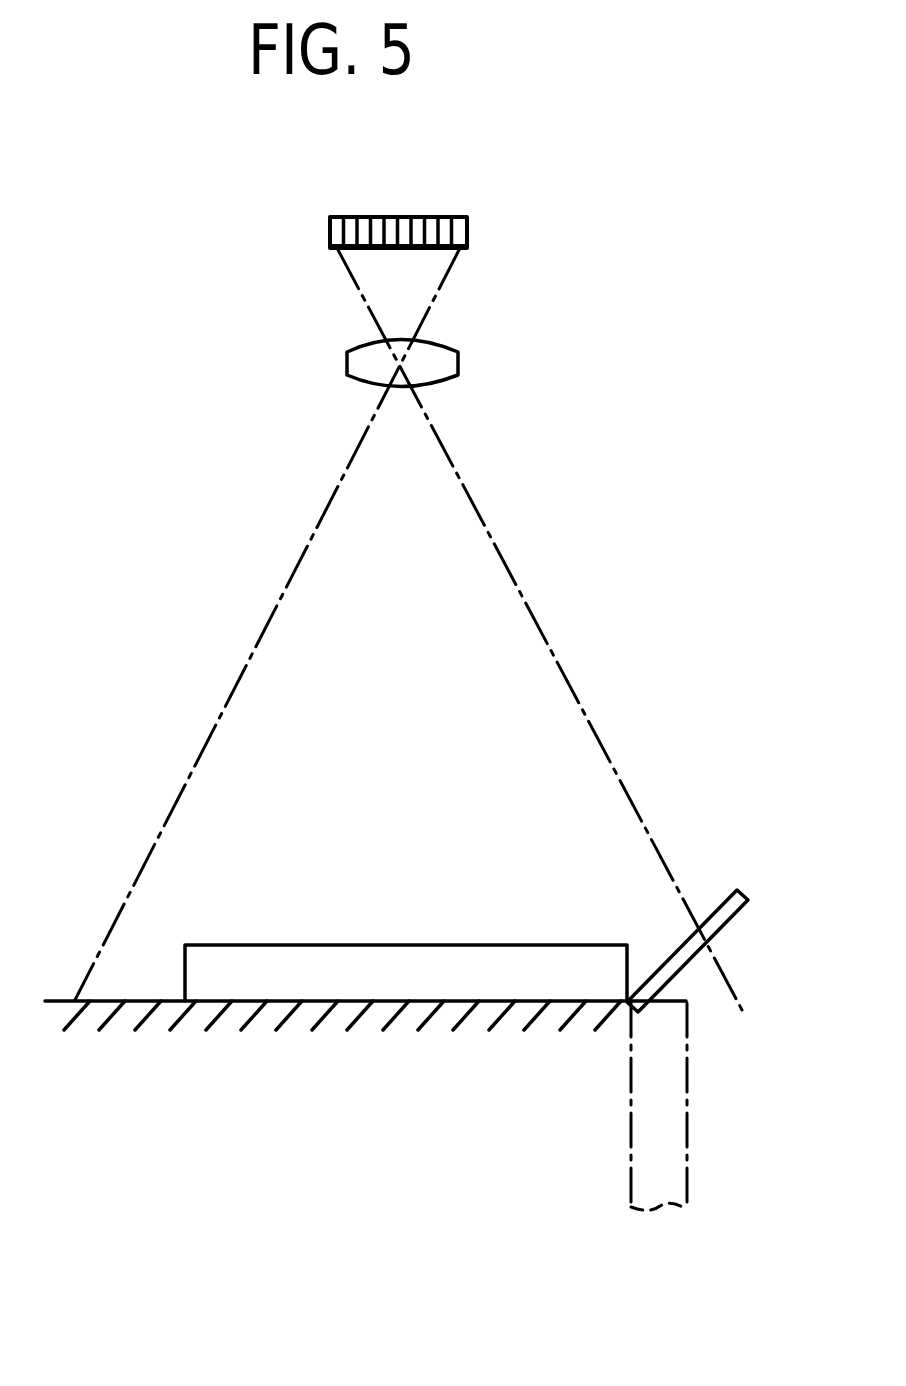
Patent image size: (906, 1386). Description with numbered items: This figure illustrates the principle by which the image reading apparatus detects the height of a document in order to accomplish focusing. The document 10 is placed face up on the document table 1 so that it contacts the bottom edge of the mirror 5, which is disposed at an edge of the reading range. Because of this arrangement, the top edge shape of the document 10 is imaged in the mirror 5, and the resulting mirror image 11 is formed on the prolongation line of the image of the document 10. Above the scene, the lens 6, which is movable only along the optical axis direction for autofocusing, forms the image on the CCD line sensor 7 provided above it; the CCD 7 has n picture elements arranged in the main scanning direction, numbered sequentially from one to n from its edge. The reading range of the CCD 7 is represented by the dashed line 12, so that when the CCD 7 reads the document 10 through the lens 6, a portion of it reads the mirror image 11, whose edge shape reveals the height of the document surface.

The document table 1 is at (302, 1025).
The mirror 5 is at (737, 888).
The lens 6 is at (460, 376).
The CCD line sensor 7 is at (400, 217).
The document 10 is at (390, 945).
The mirror image 11 is at (689, 1131).
The dashed line representing the reading range of the CCD 12 is at (338, 480).